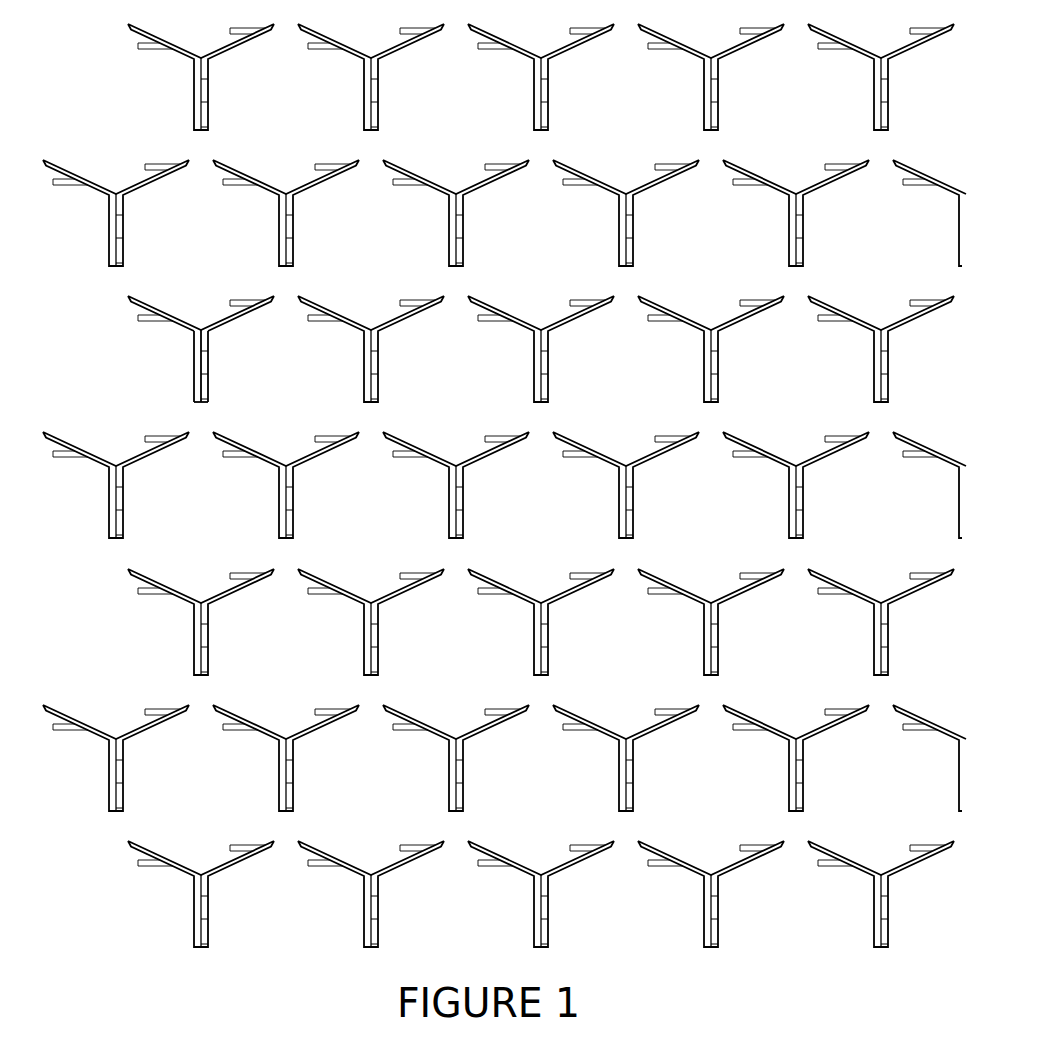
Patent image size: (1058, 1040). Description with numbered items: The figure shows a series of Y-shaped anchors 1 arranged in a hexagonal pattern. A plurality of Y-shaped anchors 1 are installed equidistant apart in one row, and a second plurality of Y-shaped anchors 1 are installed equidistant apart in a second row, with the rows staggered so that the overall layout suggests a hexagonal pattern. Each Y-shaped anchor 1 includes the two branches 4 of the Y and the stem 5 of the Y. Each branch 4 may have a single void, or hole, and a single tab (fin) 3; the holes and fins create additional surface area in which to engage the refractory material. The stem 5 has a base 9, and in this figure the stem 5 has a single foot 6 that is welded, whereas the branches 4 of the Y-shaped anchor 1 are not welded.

The Y-shaped anchor 1 is at (181, 89).
The tab (fin) 3 is at (243, 300).
The branch 4 is at (167, 312).
The stem 5 is at (193, 370).
The foot 6 is at (209, 370).
The base 9 is at (202, 404).